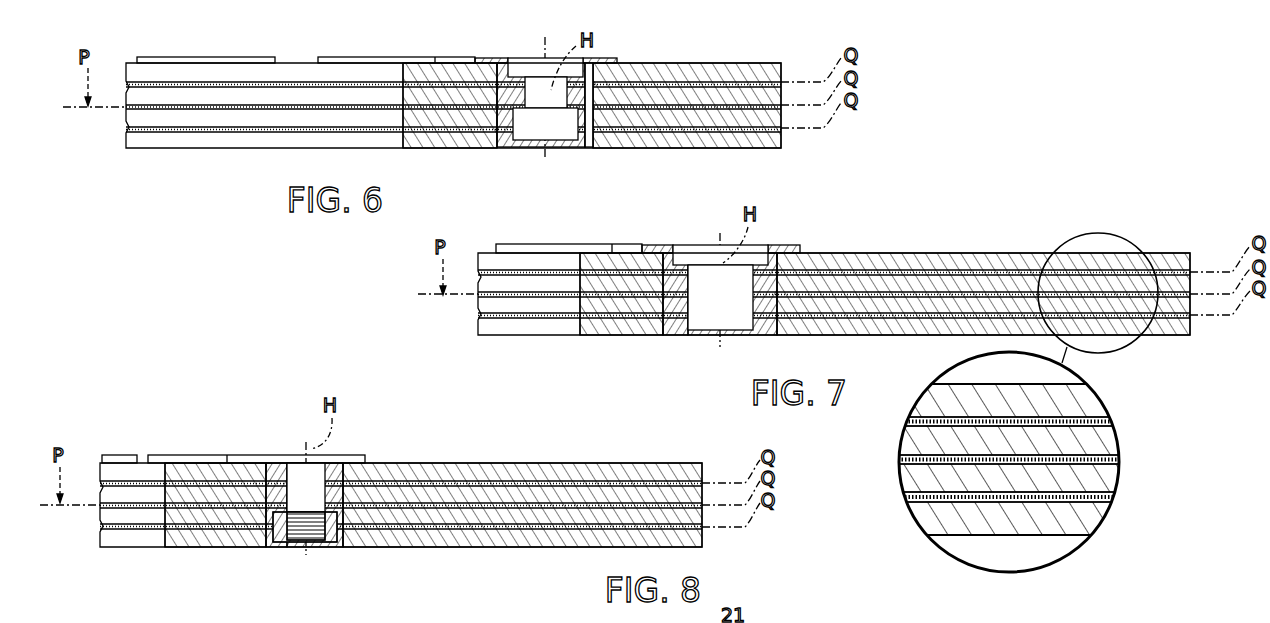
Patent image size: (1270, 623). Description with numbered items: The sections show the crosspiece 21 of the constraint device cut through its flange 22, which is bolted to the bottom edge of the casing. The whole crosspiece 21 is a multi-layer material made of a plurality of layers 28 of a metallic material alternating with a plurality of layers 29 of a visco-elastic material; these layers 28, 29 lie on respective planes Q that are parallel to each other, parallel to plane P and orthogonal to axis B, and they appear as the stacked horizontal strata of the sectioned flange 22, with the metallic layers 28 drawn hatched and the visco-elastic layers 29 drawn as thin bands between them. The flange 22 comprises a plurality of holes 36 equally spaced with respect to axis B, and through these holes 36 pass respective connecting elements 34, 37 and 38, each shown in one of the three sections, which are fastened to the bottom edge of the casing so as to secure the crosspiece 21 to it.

In FIG. 6, the crosspiece 21 is at (784, 149).
In FIG. 7, the crosspiece 21 is at (1160, 251).
In FIG. 8, the crosspiece 21 is at (167, 447).
In FIG. 7, the flange 22 is at (921, 241).
In FIG. 6, the layers of metallic material 28 is at (712, 78).
In FIG. 7, the layers of metallic material 28 is at (963, 262).
In FIG. 8, the layers of metallic material 28 is at (212, 472).
In FIG. 6, the layers of visco-elastic material 29 is at (424, 128).
In FIG. 7, the layers of visco-elastic material 29 is at (836, 271).
In FIG. 8, the layers of visco-elastic material 29 is at (448, 482).
In FIG. 6, the connecting element 34 is at (587, 130).
In FIG. 7, the holes 36 is at (669, 284).
In FIG. 8, the holes 36 is at (271, 487).
In FIG. 7, the connecting element 37 is at (760, 294).
In FIG. 8, the connecting element 38 is at (339, 472).